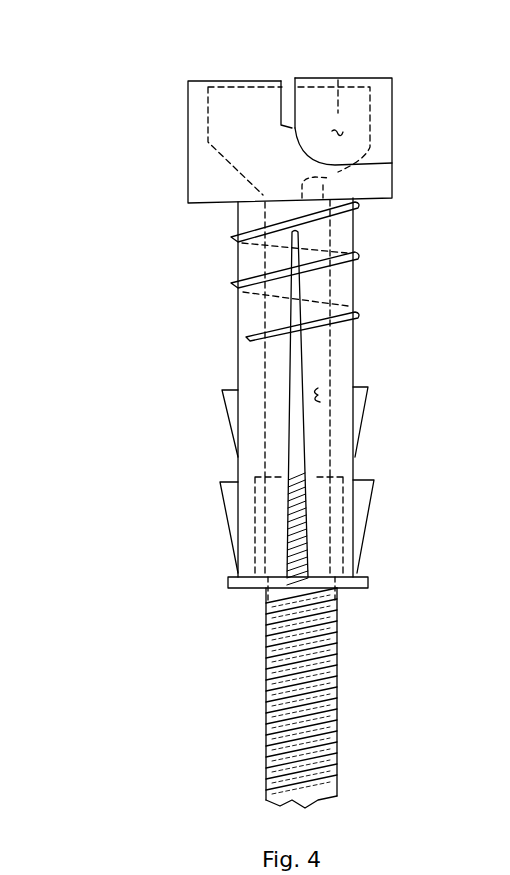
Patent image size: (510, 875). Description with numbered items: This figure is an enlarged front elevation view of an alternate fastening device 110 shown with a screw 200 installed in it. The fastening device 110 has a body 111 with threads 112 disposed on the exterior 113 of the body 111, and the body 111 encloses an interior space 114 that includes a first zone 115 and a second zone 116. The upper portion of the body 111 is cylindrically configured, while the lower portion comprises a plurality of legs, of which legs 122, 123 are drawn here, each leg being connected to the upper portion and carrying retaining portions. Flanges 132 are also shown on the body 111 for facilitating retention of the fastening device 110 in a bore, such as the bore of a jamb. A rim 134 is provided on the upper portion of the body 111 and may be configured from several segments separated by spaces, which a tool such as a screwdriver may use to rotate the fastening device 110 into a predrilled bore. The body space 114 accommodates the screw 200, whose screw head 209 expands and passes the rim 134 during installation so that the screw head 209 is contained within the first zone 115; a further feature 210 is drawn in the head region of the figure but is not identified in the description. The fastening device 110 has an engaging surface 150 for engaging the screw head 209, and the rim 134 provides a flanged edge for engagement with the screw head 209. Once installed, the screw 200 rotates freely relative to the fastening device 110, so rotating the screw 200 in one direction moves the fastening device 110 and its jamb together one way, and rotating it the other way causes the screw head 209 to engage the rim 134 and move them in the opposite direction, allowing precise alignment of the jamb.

The fastening device 110 is at (378, 278).
The body 111 is at (230, 253).
The threads 112 is at (232, 283).
The exterior 113 is at (236, 365).
The interior space 114 is at (258, 194).
The first zone 115 is at (338, 80).
The second zone 116 is at (325, 392).
The leg 122 is at (340, 453).
The leg 123 is at (253, 445).
The flanges 132 is at (224, 406).
The rim 134 is at (378, 78).
The engaging surface 150 is at (345, 203).
The screw 200 is at (328, 680).
The screw head 209 is at (287, 85).
The recess 210 is at (392, 163).